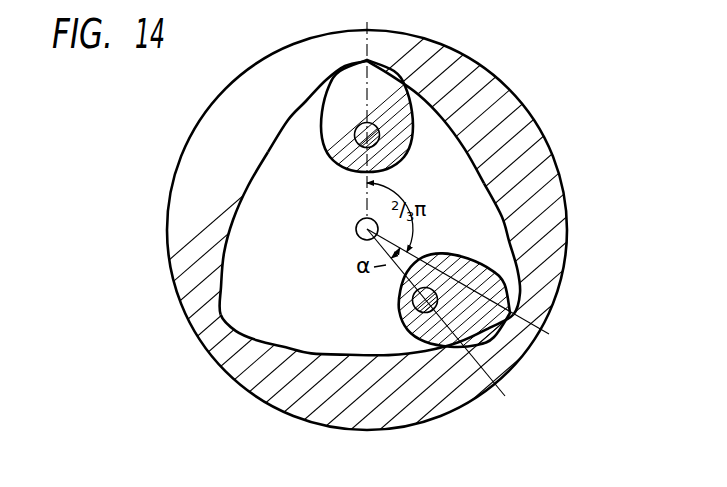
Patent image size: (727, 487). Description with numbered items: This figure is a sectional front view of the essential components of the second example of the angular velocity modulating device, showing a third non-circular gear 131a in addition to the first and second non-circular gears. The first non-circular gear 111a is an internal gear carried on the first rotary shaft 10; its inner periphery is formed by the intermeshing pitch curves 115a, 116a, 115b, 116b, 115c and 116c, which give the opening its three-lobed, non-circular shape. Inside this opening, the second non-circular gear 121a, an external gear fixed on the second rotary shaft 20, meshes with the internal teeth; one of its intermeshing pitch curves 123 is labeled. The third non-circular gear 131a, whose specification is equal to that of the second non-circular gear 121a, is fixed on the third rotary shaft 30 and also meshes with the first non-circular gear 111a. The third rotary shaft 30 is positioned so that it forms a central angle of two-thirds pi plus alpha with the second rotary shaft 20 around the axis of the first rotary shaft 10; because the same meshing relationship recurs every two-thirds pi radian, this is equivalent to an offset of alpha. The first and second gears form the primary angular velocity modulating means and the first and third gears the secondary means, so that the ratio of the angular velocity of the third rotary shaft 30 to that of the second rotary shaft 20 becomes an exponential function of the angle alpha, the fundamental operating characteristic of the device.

The first rotary shaft 10 is at (357, 237).
The second rotary shaft 20 is at (395, 165).
The third rotary shaft 30 is at (428, 286).
The first non-circular gear 111a is at (445, 57).
The intermeshing pitch curve 115a is at (441, 118).
The intermeshing pitch curve 115b is at (403, 351).
The intermeshing pitch curve 115c is at (226, 253).
The intermeshing pitch curve 116a is at (509, 242).
The intermeshing pitch curve 116b is at (276, 345).
The intermeshing pitch curve 116c is at (289, 123).
The second non-circular gear 121a is at (341, 72).
The intermeshing pitch curve 123 is at (329, 163).
The third non-circular gear 131a is at (398, 313).